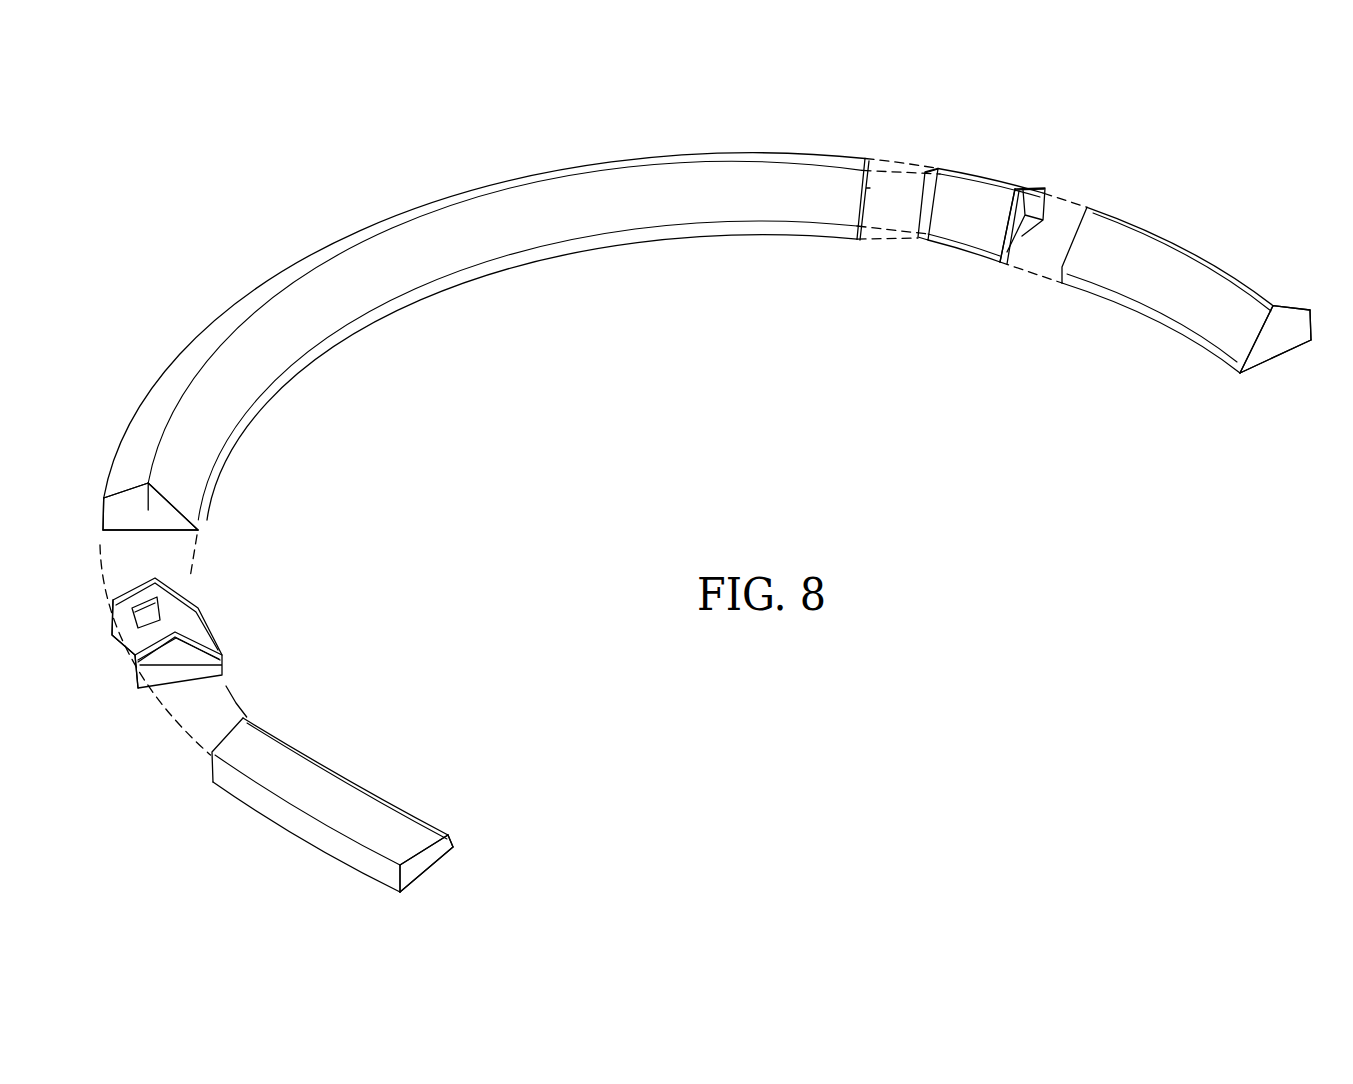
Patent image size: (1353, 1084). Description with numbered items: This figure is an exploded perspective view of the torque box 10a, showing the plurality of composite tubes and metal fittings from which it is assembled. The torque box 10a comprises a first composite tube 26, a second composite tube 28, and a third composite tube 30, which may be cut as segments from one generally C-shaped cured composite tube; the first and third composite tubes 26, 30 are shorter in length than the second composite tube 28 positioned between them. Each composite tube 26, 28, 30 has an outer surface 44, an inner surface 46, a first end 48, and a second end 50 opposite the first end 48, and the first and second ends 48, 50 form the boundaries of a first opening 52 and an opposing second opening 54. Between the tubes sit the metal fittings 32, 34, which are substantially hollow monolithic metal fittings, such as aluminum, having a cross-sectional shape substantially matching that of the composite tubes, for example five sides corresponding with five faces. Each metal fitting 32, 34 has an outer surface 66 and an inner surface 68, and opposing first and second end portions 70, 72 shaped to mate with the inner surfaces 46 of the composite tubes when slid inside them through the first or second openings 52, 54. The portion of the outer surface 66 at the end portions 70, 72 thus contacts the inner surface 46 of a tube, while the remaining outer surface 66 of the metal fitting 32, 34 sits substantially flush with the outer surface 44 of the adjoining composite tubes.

The torque box 10a is at (200, 268).
The first composite tube 26 is at (1158, 260).
The second composite tube 28 is at (525, 212).
The third composite tube 30 is at (292, 822).
The metal fitting 32 is at (988, 198).
The metal fitting 34 is at (138, 648).
The outer surface 44 is at (214, 426).
The inner surface 46 is at (176, 527).
The first end 48 is at (235, 724).
The second end 50 is at (170, 500).
The first opening 52 is at (217, 738).
The second opening 54 is at (132, 505).
The outer surface 66 is at (192, 627).
The inner surface 68 is at (193, 677).
The first end portion 70 is at (180, 598).
The second end portion 72 is at (180, 652).